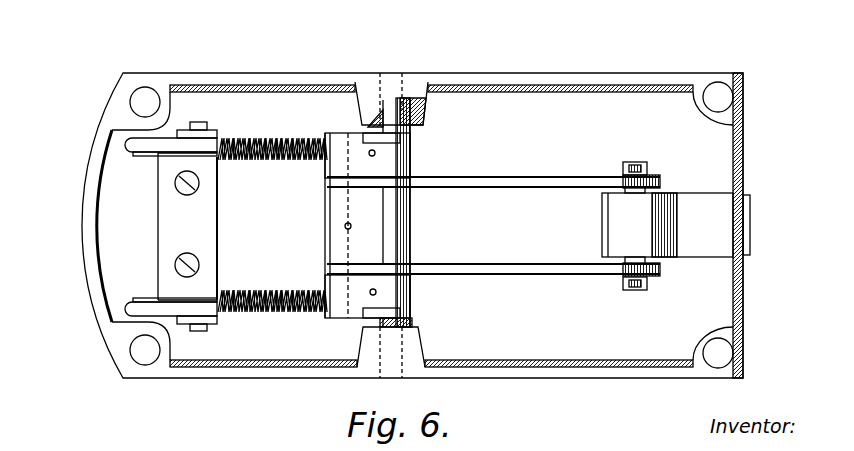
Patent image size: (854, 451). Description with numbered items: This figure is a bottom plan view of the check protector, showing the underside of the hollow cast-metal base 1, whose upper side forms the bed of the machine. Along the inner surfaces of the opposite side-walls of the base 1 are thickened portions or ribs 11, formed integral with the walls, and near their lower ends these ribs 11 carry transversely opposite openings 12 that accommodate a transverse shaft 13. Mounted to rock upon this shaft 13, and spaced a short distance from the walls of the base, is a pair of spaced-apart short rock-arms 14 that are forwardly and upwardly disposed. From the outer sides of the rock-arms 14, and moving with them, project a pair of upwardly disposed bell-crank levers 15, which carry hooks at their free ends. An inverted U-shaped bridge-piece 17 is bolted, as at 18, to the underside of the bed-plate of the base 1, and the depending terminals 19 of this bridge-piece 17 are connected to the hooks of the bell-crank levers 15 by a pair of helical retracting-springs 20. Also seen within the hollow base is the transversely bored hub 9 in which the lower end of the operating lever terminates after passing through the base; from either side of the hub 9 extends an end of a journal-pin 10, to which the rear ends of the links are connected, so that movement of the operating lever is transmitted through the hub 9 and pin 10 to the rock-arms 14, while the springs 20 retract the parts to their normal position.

The hollow cast-metal base 1 is at (78, 208).
The transversely bored hub 9 is at (622, 215).
The journal-pin 10 is at (632, 162).
The thickened portions or ribs 11 is at (390, 85).
The transversely opposite openings 12 is at (410, 128).
The transverse shaft 13 is at (402, 222).
The rock-arms 14 is at (338, 168).
The bell-crank levers 15 is at (410, 143).
The inverted U-shaped bridge-piece 17 is at (219, 224).
The bolts 18 is at (180, 192).
The depending terminals 19 is at (138, 153).
The helical retracting-springs 20 is at (270, 138).